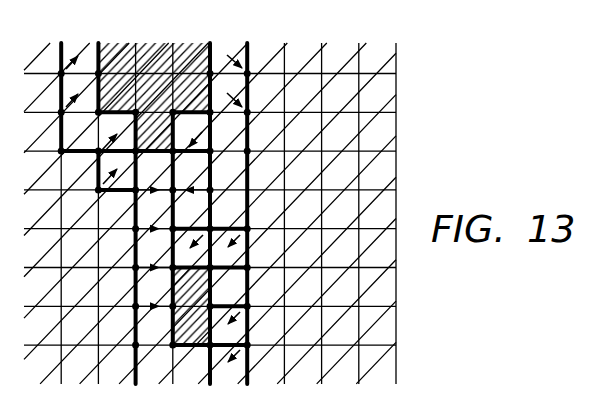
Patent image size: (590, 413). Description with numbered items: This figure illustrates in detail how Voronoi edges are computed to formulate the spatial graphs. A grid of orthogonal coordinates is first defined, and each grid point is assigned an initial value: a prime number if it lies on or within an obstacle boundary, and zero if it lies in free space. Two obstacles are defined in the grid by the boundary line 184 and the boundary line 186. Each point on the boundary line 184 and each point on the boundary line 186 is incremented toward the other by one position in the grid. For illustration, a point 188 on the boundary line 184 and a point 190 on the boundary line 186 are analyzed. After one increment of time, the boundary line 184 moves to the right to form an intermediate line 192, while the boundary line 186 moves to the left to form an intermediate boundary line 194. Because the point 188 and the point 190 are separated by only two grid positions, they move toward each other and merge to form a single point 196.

The boundary line 184 is at (137, 349).
The boundary line 186 is at (249, 348).
The point 188 is at (141, 189).
The point 190 is at (212, 197).
The intermediate line 192 is at (96, 57).
The intermediate boundary line 194 is at (211, 45).
The point 196 is at (177, 189).